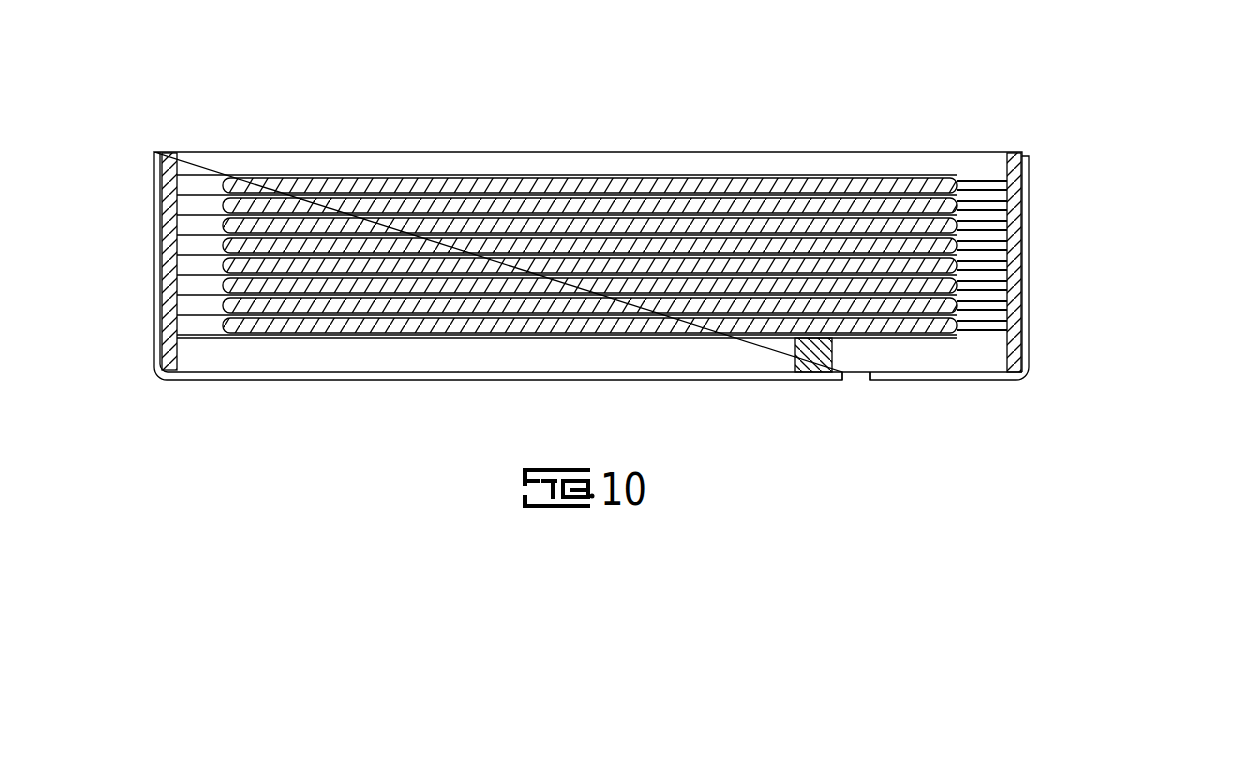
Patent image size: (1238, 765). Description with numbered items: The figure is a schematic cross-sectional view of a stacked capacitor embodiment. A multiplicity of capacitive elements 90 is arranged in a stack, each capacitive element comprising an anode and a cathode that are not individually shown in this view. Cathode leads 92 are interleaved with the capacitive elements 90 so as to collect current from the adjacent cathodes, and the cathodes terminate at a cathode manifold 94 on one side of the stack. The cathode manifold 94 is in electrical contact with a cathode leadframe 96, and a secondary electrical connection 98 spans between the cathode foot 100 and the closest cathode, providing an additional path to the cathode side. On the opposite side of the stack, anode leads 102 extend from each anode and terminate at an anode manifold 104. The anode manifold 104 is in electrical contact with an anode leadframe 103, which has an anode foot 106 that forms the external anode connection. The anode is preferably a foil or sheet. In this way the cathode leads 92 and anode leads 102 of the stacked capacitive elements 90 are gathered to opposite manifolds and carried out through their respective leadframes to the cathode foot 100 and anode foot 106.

The capacitive elements 90 is at (497, 185).
The cathode leads 92 is at (183, 215).
The cathode manifold 94 is at (168, 155).
The cathode leadframe 96 is at (157, 227).
The secondary electrical connection 98 is at (815, 363).
The cathode foot 100 is at (662, 381).
The anode leads 102 is at (1003, 245).
The anode leadframe 103 is at (1028, 255).
The anode manifold 104 is at (1017, 360).
The anode foot 106 is at (927, 378).